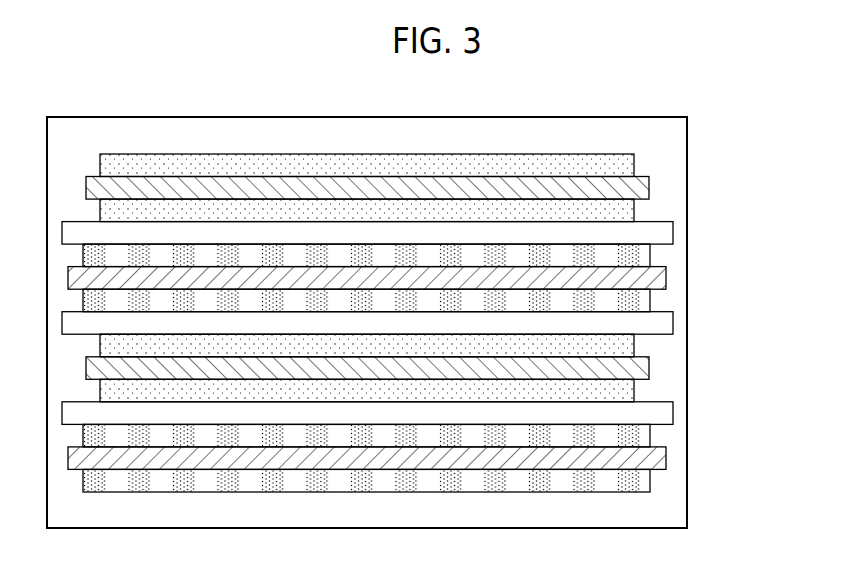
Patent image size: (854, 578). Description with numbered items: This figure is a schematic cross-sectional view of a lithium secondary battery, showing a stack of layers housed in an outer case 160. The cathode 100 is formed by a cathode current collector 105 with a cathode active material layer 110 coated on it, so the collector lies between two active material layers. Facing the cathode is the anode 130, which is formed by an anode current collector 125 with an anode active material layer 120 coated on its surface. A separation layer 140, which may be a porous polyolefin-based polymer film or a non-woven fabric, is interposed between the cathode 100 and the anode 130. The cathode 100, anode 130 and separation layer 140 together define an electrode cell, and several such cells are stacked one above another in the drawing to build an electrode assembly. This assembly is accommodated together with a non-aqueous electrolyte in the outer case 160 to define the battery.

The cathode 100 is at (454, 191).
The cathode current collector 105 is at (649, 190).
The cathode active material layer 110 is at (634, 162).
The anode active material layer 120 is at (645, 255).
The anode current collector 125 is at (666, 280).
The anode 130 is at (445, 280).
The separation layer 140 is at (553, 230).
The outer case 160 is at (687, 457).